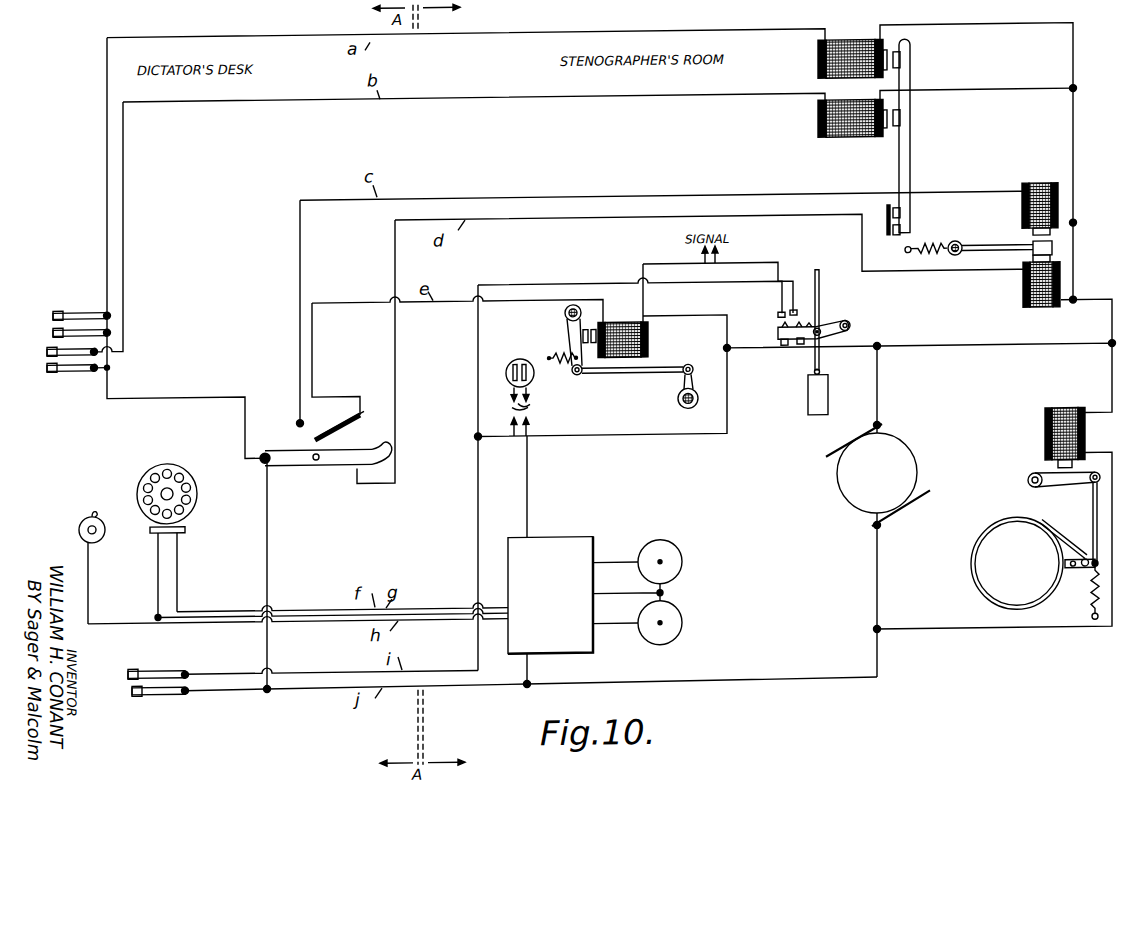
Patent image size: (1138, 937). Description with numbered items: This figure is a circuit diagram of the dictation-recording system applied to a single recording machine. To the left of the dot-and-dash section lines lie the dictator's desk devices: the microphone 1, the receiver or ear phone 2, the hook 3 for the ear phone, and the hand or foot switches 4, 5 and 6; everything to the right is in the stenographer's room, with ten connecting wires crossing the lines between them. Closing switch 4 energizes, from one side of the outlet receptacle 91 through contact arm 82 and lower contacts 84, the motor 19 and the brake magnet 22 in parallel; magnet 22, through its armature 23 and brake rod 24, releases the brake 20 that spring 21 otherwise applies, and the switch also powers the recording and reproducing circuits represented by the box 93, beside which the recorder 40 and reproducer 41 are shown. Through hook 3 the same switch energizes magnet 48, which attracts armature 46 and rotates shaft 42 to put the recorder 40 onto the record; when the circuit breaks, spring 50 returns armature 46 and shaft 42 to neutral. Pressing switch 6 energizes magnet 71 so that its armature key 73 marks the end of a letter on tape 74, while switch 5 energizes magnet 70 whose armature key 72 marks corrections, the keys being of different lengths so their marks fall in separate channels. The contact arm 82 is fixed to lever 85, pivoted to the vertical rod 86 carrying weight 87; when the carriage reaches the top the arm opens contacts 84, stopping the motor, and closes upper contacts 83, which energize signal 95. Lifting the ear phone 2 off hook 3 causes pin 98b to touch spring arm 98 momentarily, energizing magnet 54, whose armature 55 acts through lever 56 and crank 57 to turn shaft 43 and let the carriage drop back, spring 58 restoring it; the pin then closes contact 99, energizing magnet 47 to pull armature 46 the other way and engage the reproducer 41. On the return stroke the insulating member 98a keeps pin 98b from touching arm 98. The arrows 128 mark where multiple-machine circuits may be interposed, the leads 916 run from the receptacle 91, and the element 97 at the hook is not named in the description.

The microphone 1 is at (188, 481).
The receiver or ear phone 2 is at (100, 521).
The hook 3 is at (292, 471).
The hand or foot switch 4 is at (153, 685).
The switch button 5 is at (53, 318).
The switch button 6 is at (47, 357).
The motor 19 is at (898, 461).
The brake 20 is at (1060, 559).
The spring 21 is at (1090, 602).
The magnet 22 is at (1046, 442).
The armature 23 is at (1074, 495).
The brake rod 24 is at (1092, 534).
The recorder 40 is at (677, 563).
The reproducer 41 is at (677, 627).
The shaft 42 is at (968, 243).
The shaft 43 is at (681, 415).
The armature 46 is at (1005, 245).
The magnet 47 is at (1040, 206).
The magnet 48 is at (1042, 320).
The spring 50 is at (906, 264).
The magnet 54 is at (648, 339).
The armature 55 is at (566, 335).
The lever 56 is at (652, 378).
The crank 57 is at (683, 390).
The spring 58 is at (556, 361).
The magnet 70 is at (818, 70).
The magnet 71 is at (818, 135).
The armature key 72 is at (905, 155).
The armature key 73 is at (910, 238).
The tape 74 is at (887, 215).
The contact arm 82 is at (808, 330).
The upper contacts 83 is at (778, 327).
The lower contacts 84 is at (783, 357).
The lever 85 is at (851, 337).
The vertical rod 86 is at (819, 283).
The weight 87 is at (820, 403).
The outlet receptacle 91 is at (533, 384).
The box 93 is at (562, 549).
The signal 95 is at (704, 274).
The hook 97 is at (356, 471).
The spring arm 98 is at (336, 437).
The flexible insulating member 98a is at (339, 427).
The pin 98b is at (310, 459).
The contact 99 is at (296, 427).
The arrows 128 is at (531, 415).
The plug contacts 916 is at (522, 444).